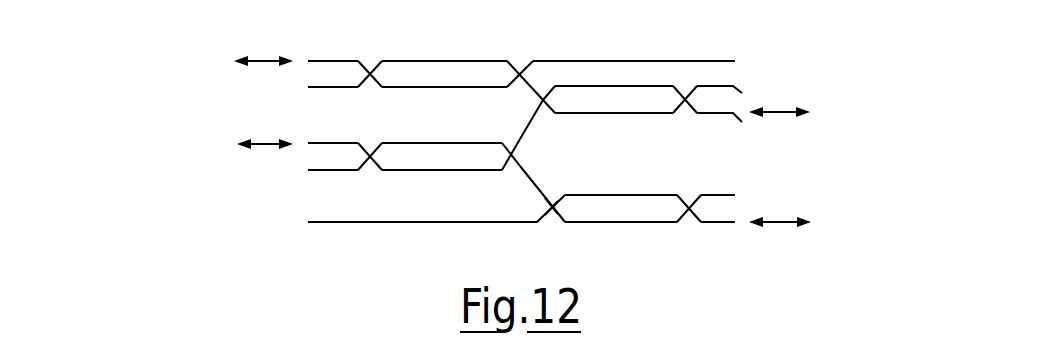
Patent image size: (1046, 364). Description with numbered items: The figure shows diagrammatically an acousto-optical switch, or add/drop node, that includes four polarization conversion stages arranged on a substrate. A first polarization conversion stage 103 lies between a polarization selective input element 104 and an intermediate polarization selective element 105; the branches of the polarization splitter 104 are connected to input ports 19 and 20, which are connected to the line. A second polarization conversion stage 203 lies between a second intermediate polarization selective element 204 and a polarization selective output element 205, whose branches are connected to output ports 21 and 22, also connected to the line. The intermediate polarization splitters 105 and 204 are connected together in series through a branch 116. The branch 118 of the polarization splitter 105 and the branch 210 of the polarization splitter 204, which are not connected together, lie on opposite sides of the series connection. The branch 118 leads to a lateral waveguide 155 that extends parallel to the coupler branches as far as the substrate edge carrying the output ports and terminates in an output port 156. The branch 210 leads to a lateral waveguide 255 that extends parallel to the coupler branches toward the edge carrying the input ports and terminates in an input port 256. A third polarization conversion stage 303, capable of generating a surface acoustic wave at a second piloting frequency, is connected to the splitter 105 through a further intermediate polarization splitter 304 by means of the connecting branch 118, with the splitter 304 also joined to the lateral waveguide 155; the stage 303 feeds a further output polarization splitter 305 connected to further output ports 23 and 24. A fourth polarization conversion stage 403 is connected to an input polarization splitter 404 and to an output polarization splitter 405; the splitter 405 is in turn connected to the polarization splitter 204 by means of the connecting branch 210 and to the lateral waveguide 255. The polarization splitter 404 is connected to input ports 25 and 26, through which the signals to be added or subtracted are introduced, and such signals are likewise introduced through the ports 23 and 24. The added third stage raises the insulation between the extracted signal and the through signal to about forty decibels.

The input port 19 is at (308, 143).
The input port 20 is at (308, 170).
The output port 21 is at (742, 93).
The output port 22 is at (742, 122).
The output port 23 is at (735, 195).
The output port 24 is at (735, 222).
The input port 25 is at (308, 61).
The input port 26 is at (308, 87).
The polarization conversion stage 103 is at (414, 134).
The polarization selective input element 104 is at (369, 143).
The intermediate polarization selective element 105 is at (511, 143).
The branch 116 is at (528, 127).
The branch 118 is at (532, 183).
The lateral waveguide 155 is at (400, 222).
The output port 156 is at (308, 222).
The polarization conversion stage 203 is at (624, 119).
The intermediate polarization selective element 204 is at (547, 89).
The polarization selective output element 205 is at (690, 89).
The branch 210 is at (524, 89).
The lateral waveguide 255 is at (610, 61).
The input port 256 is at (735, 61).
The third polarization conversion stage 303 is at (636, 231).
The intermediate polarization splitter 304 is at (552, 195).
The output polarization splitter 305 is at (689, 197).
The fourth polarization conversion stage 403 is at (434, 53).
The input polarization splitter 404 is at (370, 61).
The output polarization splitter 405 is at (520, 62).